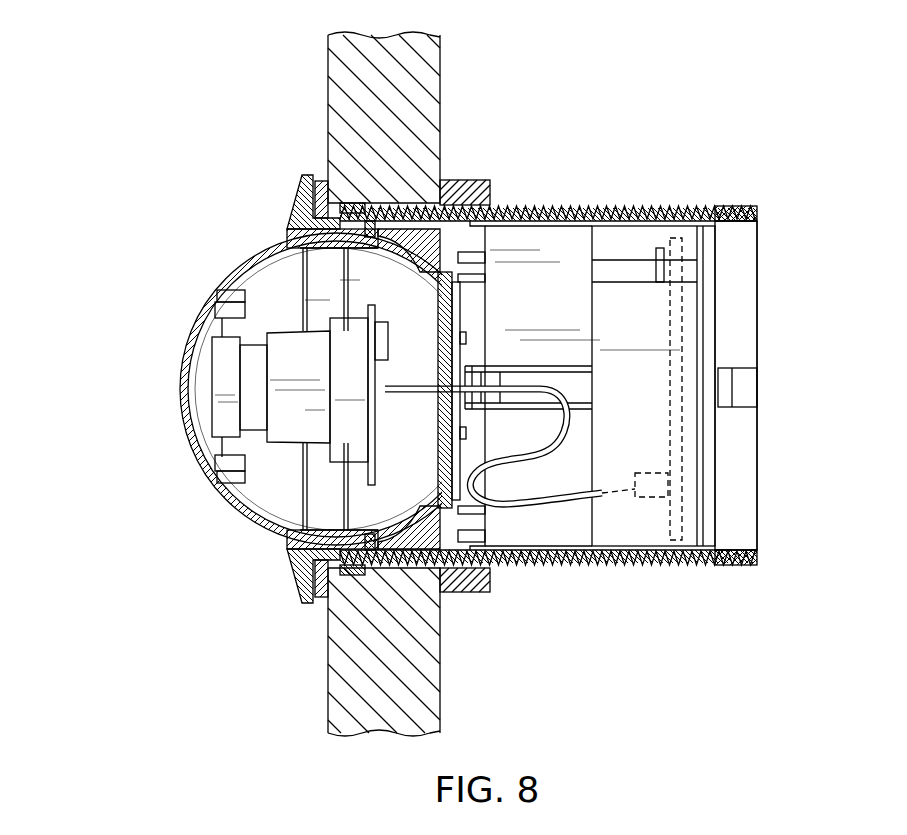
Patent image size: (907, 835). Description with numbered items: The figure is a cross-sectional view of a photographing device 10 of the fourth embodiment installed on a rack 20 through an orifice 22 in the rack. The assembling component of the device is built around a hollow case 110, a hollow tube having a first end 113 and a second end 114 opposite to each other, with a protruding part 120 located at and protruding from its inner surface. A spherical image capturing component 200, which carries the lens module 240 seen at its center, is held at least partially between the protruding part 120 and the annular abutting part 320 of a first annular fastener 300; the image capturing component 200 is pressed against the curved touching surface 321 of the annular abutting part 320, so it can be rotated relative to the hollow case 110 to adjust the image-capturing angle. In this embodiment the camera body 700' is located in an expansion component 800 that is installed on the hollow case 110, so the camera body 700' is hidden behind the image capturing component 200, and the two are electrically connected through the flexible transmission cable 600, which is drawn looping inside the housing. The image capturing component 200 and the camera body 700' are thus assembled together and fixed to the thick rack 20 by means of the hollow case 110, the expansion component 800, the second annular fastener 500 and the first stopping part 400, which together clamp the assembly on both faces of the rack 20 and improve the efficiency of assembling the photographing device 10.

The photographing device 10 is at (812, 372).
The rack 20 is at (362, 687).
The orifice 22 is at (413, 207).
The hollow case 110 is at (447, 207).
The first end 113 is at (312, 205).
The second end 114 is at (516, 212).
The protruding part 120 is at (388, 207).
The image capturing component 200 is at (170, 340).
The lens module 240 is at (222, 392).
The first annular fastener 300 is at (302, 400).
The annular abutting part 320 is at (300, 561).
The touching surface 321 is at (296, 527).
The first stopping part 400 is at (343, 585).
The second annular fastener 500 is at (468, 602).
The flexible transmission cable 600 is at (547, 509).
The camera body 700' is at (778, 385).
The expansion component 800 is at (614, 205).